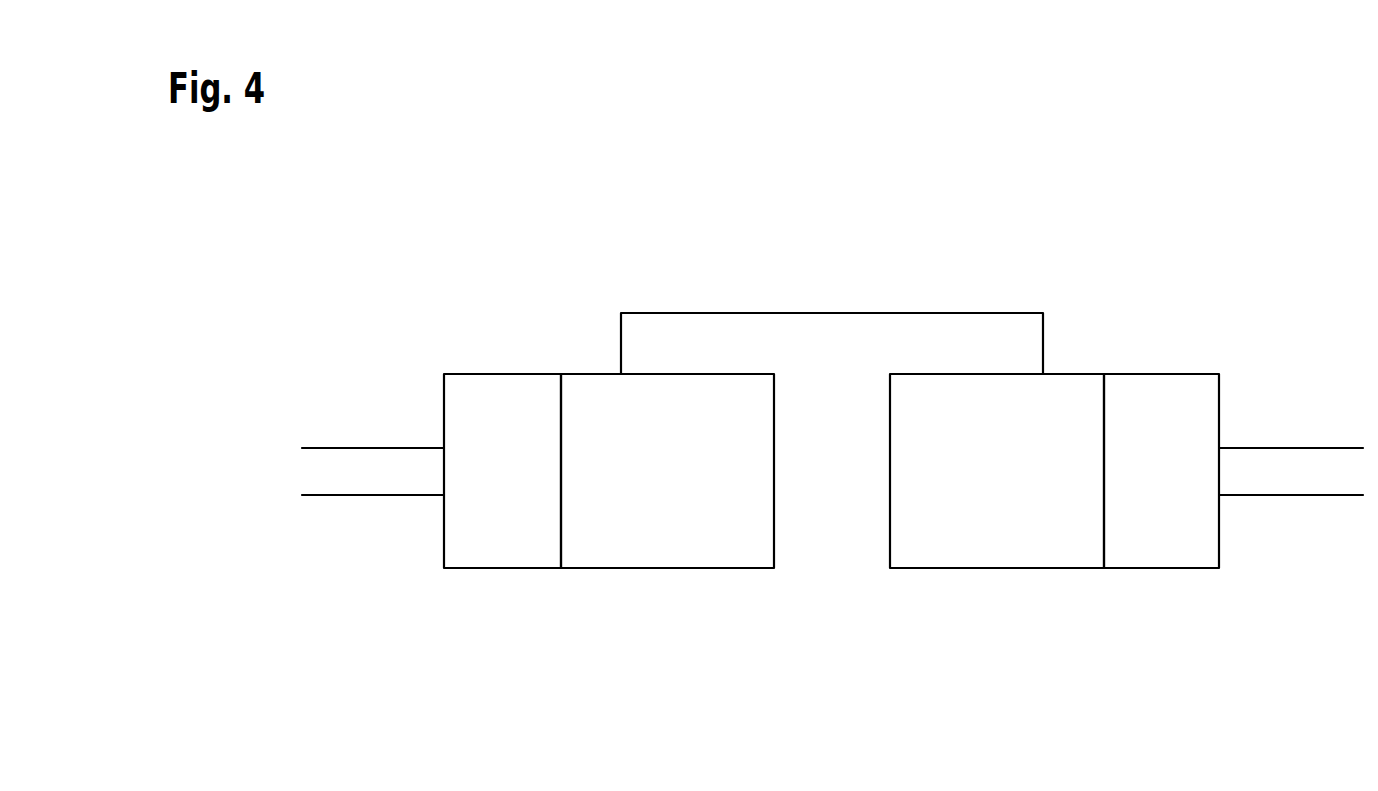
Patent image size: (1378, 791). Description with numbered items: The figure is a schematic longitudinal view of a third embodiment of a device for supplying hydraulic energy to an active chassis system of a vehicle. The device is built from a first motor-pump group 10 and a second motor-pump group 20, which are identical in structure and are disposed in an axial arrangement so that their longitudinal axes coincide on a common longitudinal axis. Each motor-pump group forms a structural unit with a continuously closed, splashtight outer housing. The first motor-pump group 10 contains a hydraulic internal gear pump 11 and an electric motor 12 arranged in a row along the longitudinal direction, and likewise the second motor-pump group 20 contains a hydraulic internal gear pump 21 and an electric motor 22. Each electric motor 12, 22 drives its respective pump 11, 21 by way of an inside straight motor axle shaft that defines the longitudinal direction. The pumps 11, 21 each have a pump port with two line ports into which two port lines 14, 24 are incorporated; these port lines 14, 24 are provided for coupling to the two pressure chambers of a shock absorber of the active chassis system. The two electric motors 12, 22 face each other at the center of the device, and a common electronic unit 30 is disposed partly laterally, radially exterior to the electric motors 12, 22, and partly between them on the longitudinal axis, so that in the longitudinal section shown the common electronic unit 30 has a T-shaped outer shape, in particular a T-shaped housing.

The first motor-pump group 10 is at (609, 552).
The hydraulic internal gear pump 11 is at (502, 550).
The electric motor 12 is at (667, 517).
The port lines 14 is at (375, 497).
The second motor-pump group 20 is at (1054, 552).
The hydraulic internal gear pump 21 is at (1161, 517).
The electric motor 22 is at (972, 550).
The port lines 24 is at (1289, 495).
The common electronic unit 30 is at (790, 333).